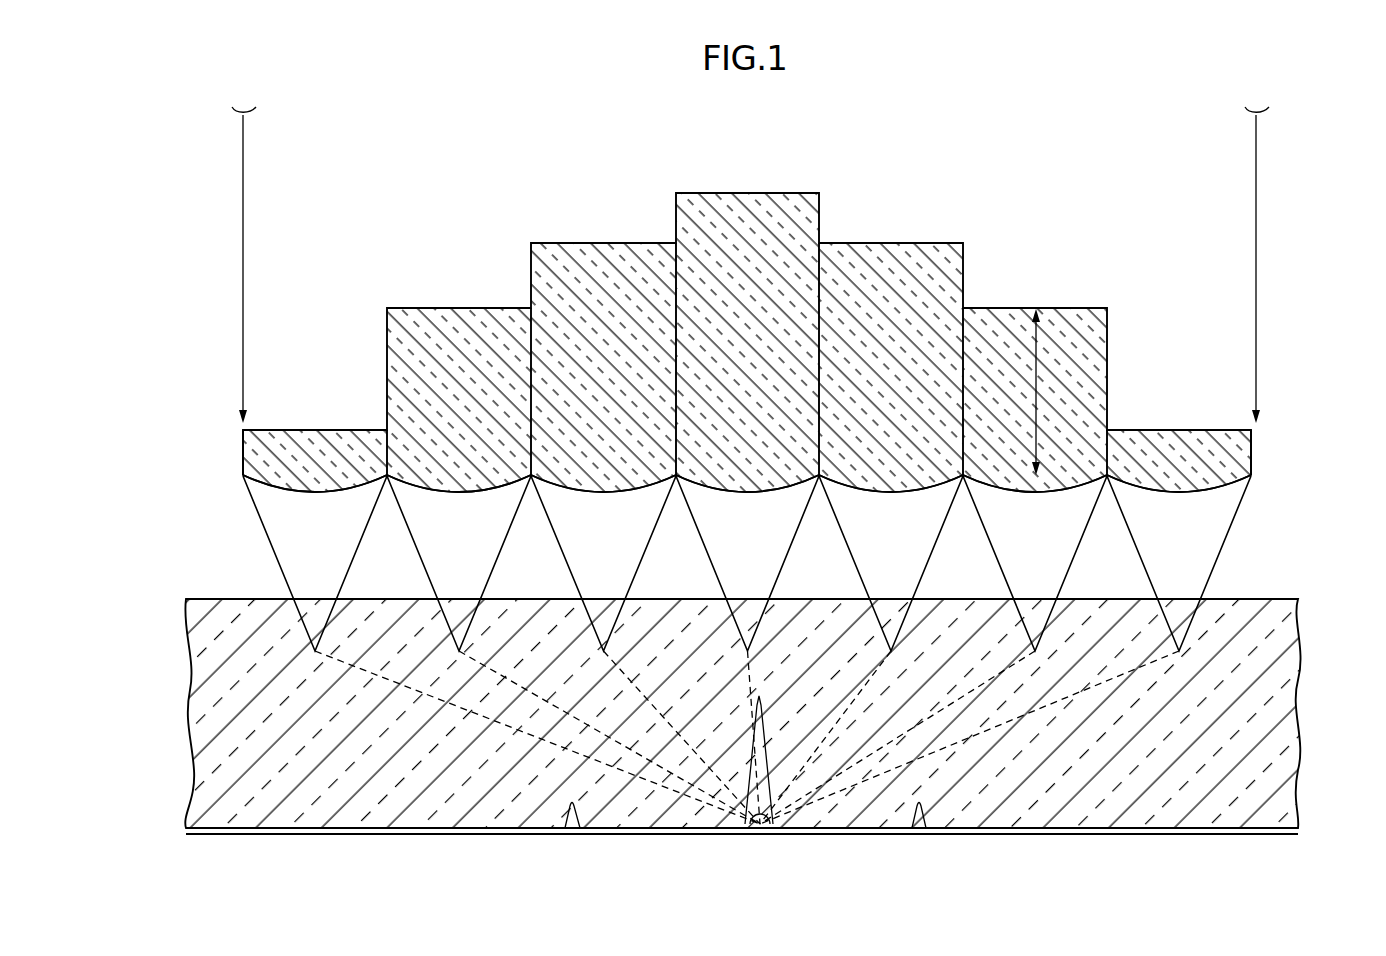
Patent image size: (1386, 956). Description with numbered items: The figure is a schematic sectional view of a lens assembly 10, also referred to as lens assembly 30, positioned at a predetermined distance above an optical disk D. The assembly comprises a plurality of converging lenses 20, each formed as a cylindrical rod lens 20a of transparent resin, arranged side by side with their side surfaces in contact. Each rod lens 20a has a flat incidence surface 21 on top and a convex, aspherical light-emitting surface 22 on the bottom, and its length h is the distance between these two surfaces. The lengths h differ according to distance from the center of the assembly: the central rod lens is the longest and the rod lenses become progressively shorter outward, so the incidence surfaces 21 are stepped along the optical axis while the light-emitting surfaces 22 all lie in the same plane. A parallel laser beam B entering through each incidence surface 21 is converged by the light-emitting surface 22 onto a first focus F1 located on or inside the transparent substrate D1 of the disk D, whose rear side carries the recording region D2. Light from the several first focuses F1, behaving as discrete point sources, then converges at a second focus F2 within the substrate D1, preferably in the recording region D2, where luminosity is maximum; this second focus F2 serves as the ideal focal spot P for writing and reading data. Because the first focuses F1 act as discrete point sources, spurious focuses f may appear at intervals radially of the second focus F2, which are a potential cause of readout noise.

The lens assembly 10 is at (785, 344).
The converging lens 20 is at (785, 344).
The rod lens 20a is at (820, 203).
The incidence surface 21 is at (904, 243).
The light-emitting surface 22 is at (612, 494).
The lens assembly 30 is at (267, 352).
The laser beam B is at (1257, 199).
The length h is at (1038, 398).
The optical disk D is at (771, 709).
The transparent substrate D1 is at (1272, 718).
The recording region D2 is at (1030, 818).
The first focus F1 is at (460, 653).
The second focus F2 is at (758, 830).
The ideal focal spot P is at (770, 830).
The spurious focus f is at (573, 803).